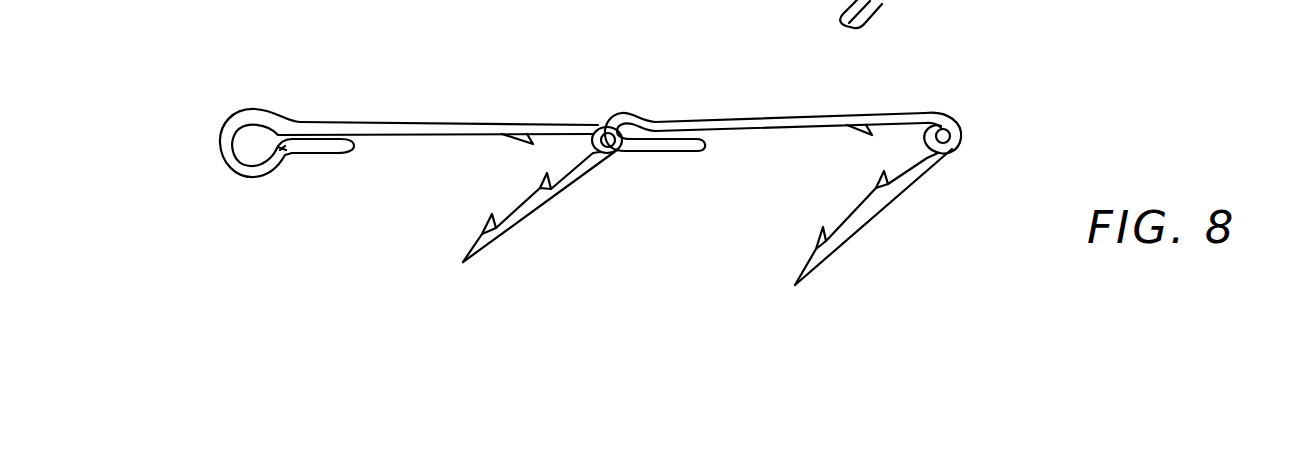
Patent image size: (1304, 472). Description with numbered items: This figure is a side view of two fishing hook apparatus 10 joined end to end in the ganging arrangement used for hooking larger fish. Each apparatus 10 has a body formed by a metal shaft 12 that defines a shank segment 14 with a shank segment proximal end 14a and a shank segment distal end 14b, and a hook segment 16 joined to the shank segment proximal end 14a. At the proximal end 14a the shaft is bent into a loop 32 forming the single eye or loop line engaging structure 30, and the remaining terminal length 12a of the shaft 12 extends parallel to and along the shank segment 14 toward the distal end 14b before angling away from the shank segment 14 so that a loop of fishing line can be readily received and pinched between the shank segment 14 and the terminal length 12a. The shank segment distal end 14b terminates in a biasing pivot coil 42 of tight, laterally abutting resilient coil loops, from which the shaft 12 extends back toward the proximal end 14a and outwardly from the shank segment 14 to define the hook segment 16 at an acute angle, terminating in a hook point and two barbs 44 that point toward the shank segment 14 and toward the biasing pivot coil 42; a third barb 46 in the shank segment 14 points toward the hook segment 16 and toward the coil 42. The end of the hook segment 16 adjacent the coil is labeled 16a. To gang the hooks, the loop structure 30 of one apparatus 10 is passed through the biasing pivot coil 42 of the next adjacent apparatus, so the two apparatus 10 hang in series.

The fishing hook apparatus 10 is at (513, 40).
The metal shaft 12 is at (390, 123).
The terminal length of the shaft 12a is at (310, 152).
The shank segment 14 is at (450, 123).
The shank segment proximal end 14a is at (313, 123).
The shank segment distal end 14b is at (572, 128).
The hook segment 16 is at (532, 212).
The end of spike 16a is at (948, 155).
The single eye or loop line engaging structure 30 is at (299, 63).
The loop 32 is at (223, 147).
The biasing pivot coil 42 is at (593, 128).
The barbs 44 is at (547, 177).
The third barb 46 is at (510, 140).